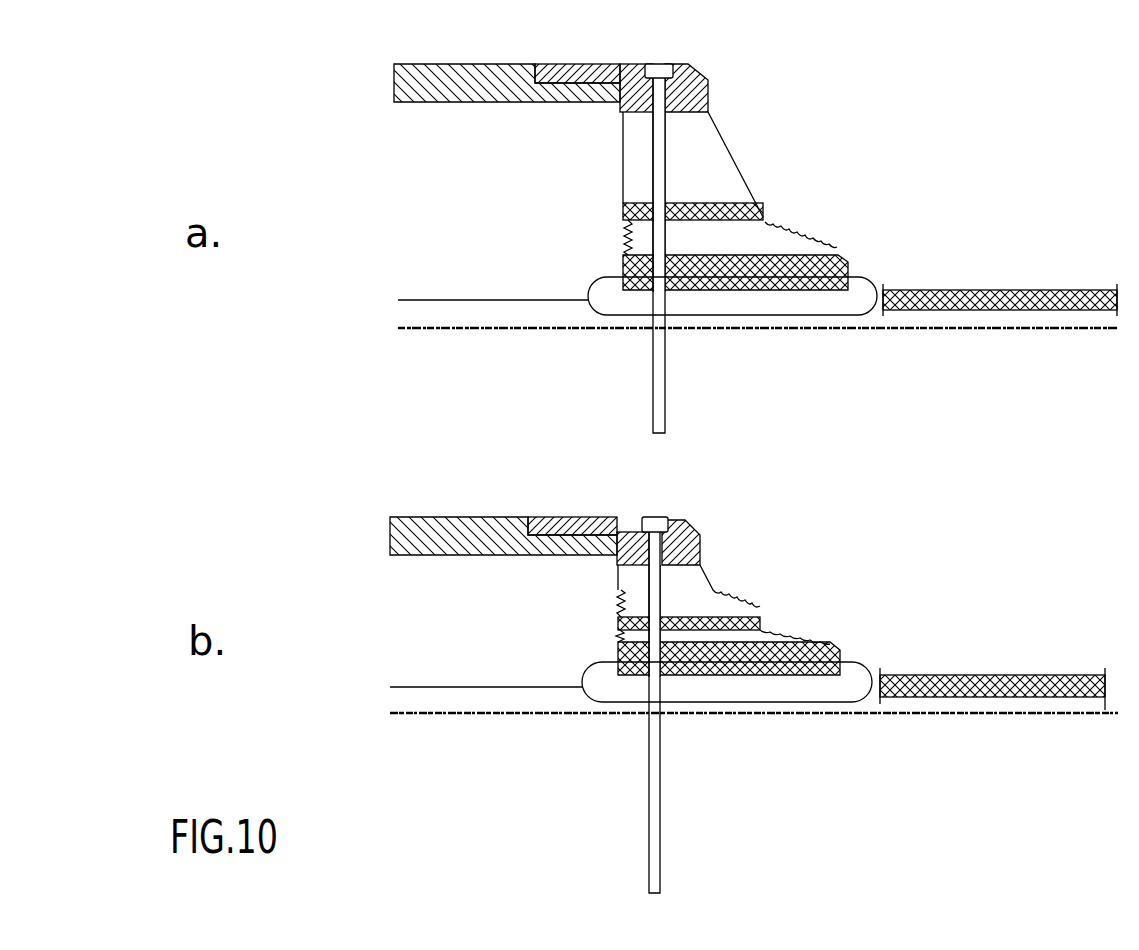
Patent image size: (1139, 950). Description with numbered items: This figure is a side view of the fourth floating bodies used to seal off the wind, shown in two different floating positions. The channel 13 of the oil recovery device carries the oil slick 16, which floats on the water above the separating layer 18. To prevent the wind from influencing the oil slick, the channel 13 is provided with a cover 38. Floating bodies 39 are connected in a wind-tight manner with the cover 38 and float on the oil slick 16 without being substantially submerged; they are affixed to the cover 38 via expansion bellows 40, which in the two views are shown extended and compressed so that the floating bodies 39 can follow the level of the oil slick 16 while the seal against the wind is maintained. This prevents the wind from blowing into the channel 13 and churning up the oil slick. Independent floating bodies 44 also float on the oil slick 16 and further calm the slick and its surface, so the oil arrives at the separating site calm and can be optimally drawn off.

The channel 13 is at (388, 220).
The oil slick 16 is at (505, 300).
The separating layer 18 is at (490, 328).
The cover 38 is at (452, 82).
The floating bodies 39 is at (722, 303).
The expansion bellows 40 is at (728, 140).
The independent floating bodies 44 is at (1040, 292).